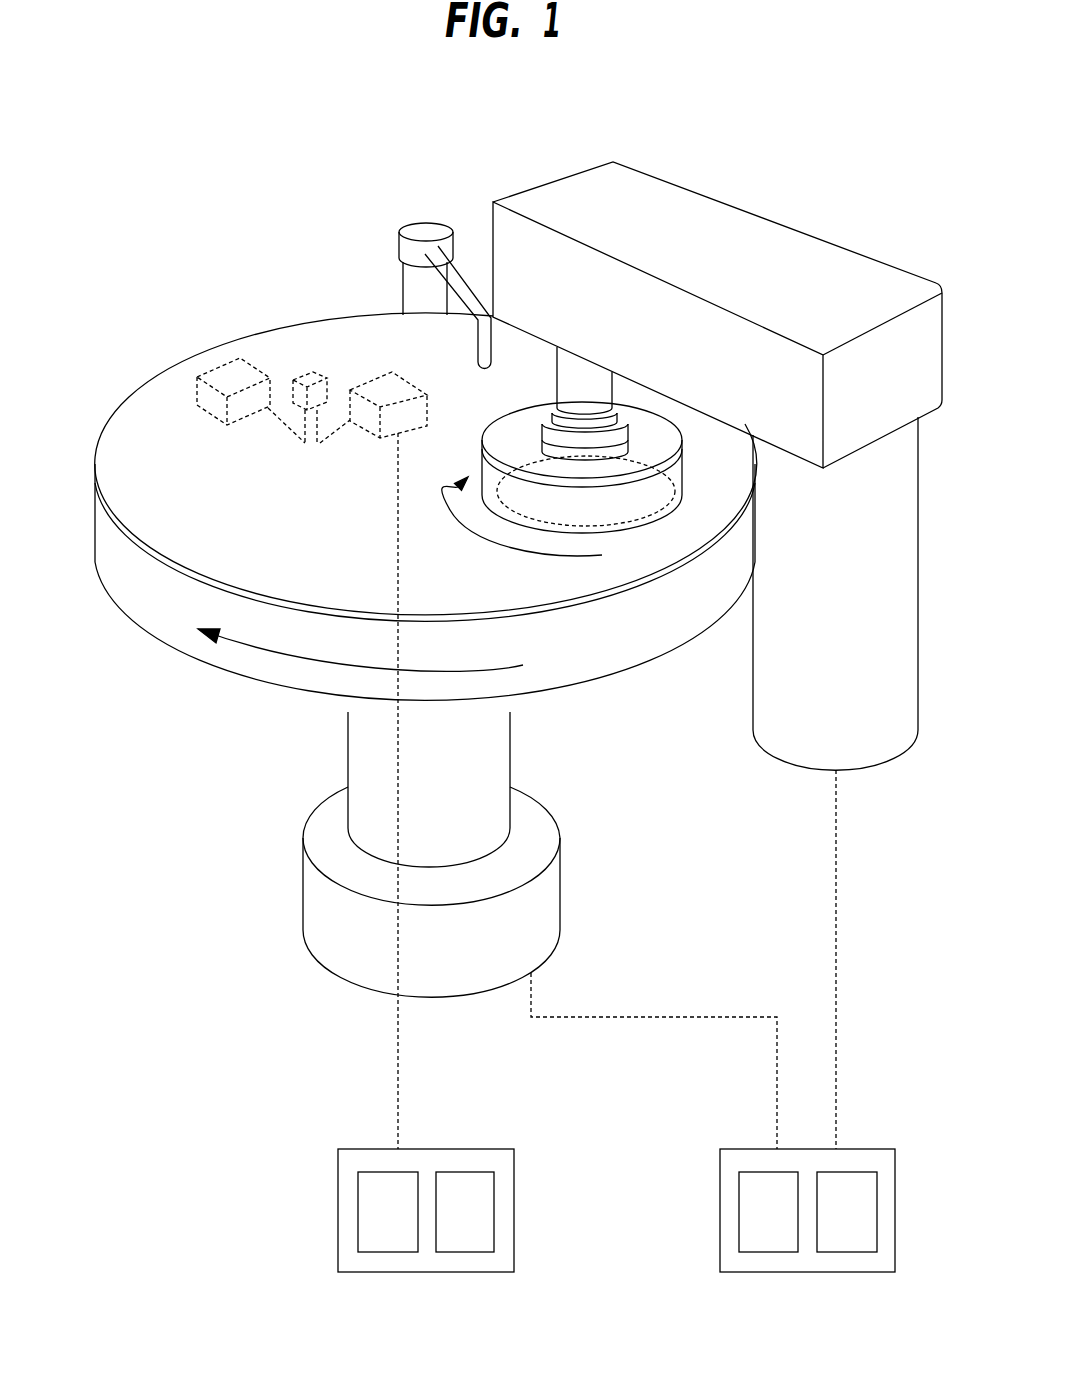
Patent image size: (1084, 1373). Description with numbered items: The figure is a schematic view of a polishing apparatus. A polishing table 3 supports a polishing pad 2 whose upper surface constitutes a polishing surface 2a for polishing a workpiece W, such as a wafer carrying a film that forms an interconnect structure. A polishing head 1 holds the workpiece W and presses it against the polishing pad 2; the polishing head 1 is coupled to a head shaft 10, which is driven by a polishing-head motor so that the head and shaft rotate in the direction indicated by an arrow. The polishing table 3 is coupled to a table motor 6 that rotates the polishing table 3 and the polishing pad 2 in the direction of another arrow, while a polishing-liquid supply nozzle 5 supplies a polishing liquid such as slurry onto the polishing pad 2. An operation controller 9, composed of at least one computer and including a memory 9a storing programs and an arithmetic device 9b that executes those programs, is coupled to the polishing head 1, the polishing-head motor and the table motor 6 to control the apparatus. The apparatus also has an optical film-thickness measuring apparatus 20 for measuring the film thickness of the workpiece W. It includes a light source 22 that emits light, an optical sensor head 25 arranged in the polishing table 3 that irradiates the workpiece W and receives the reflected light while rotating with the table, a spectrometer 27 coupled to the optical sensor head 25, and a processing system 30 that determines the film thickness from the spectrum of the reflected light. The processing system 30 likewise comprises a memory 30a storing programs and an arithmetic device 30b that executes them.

The polishing head 1 is at (515, 443).
The polishing pad 2 is at (542, 612).
The polishing surface 2a is at (137, 433).
The polishing table 3 is at (607, 662).
The polishing-liquid supply nozzle 5 is at (432, 223).
The table motor 6 is at (560, 878).
The operation controller 9 is at (719, 1021).
The memory 9a is at (770, 1170).
The arithmetic device 9b is at (848, 1170).
The head shaft 10 is at (558, 372).
The optical film-thickness measuring apparatus 20 is at (272, 346).
The light source 22 is at (220, 358).
The optical sensor head 25 is at (310, 370).
The spectrometer 27 is at (377, 372).
The processing system 30 is at (383, 1177).
The memory 30a is at (388, 1170).
The arithmetic device 30b is at (465, 1170).
The workpiece W is at (652, 512).